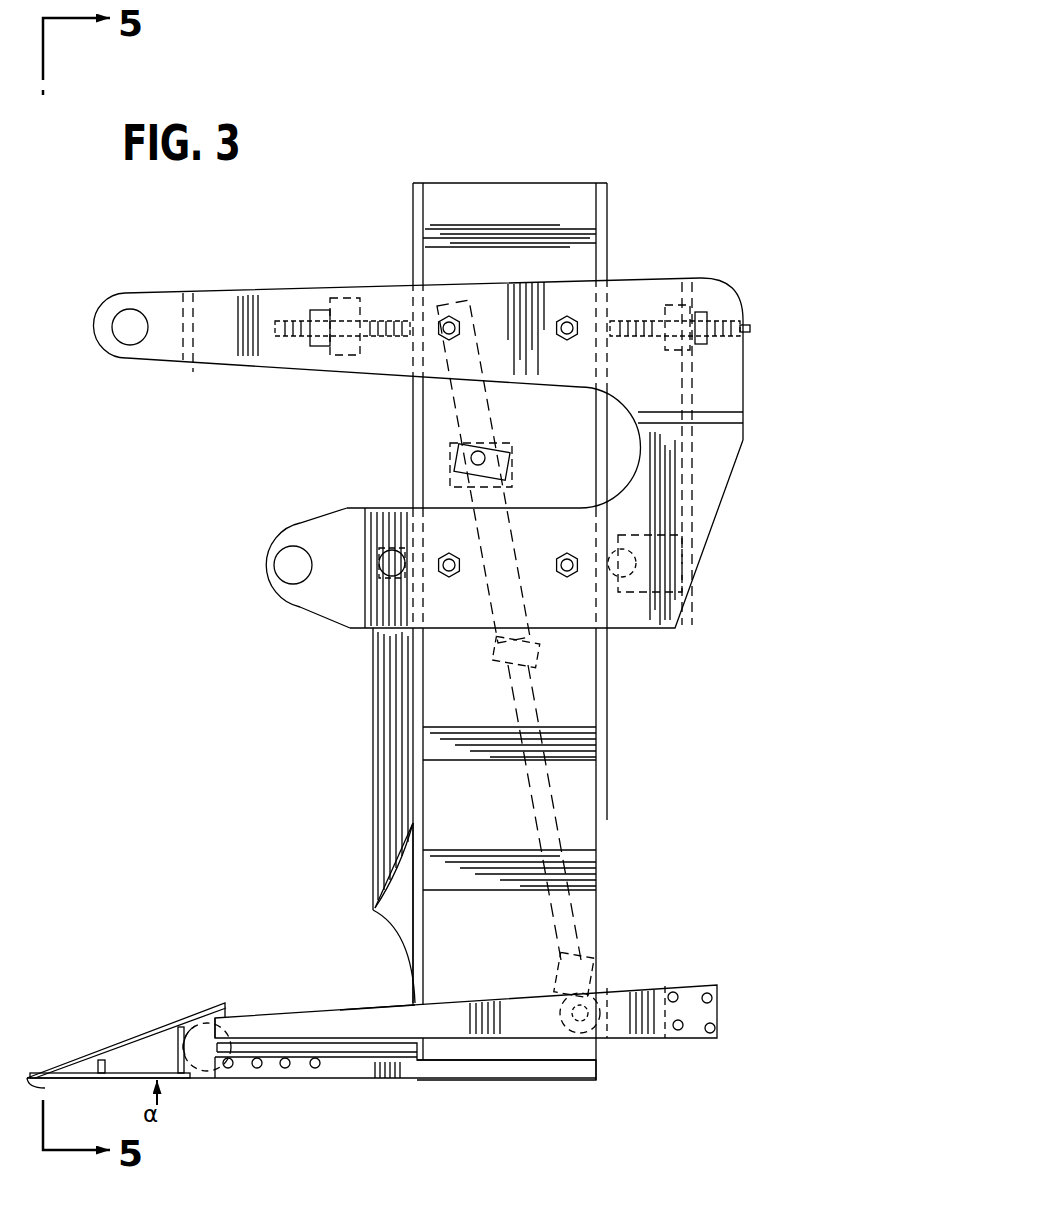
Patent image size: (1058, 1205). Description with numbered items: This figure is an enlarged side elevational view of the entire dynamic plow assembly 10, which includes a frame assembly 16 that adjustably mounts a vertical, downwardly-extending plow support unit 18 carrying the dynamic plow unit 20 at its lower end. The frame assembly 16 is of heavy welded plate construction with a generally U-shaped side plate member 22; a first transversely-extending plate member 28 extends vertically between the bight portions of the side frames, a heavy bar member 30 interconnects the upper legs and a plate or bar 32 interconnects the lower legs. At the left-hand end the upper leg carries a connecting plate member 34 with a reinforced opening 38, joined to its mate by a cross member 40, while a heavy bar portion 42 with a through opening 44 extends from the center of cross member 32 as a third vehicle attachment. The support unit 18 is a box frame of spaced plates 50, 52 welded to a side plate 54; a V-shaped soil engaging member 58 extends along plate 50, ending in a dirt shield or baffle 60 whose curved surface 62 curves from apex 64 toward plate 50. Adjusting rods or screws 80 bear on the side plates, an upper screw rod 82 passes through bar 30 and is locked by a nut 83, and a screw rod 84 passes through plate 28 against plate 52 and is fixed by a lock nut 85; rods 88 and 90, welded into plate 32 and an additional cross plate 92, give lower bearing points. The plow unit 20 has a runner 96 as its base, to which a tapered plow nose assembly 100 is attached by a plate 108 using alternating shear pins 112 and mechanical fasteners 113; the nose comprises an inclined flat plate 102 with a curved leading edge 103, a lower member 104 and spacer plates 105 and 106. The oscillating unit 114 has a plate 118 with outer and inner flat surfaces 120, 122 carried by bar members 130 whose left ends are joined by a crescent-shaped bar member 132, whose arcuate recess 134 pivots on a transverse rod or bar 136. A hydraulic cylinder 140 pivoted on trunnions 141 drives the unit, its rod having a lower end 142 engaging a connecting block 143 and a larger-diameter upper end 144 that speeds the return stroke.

The dynamic plow assembly 10 is at (655, 222).
The frame assembly 16 is at (772, 333).
The plow support unit 18 is at (612, 712).
The dynamic plow unit 20 is at (386, 983).
The side plate member 22 is at (630, 620).
The first transversely-extending plate member 28 is at (693, 388).
The bar member 30 is at (340, 355).
The plate or bar 32 is at (398, 507).
The connecting plate member 34 is at (218, 340).
The reinforced opening 38 is at (128, 335).
The cross member 40 is at (197, 360).
The bar portion 42 is at (275, 595).
The through opening 44 is at (285, 566).
The plate 50 is at (412, 690).
The plate 52 is at (605, 700).
The side plate 54 is at (580, 792).
The soil engaging member 58 is at (392, 732).
The dirt shield or baffle 60 is at (410, 965).
The curved surface 62 is at (390, 937).
The apex 64 is at (382, 770).
The adjusting rods or screws 80 is at (445, 340).
The upper screw rod 82 is at (375, 312).
The nut 83 is at (318, 310).
The screw rod 84 is at (625, 330).
The lock nut 85 is at (705, 322).
The rod 88 is at (398, 580).
The rod 90 is at (625, 565).
The cross plate 92 is at (672, 592).
The runner 96 is at (560, 1068).
The plow nose assembly 100 is at (150, 1003).
The inclined flat plate 102 is at (83, 1050).
The leading edge 103 is at (45, 1090).
The lower member 104 is at (78, 1078).
The spacer plate 105 is at (105, 1062).
The spacer plate 106 is at (188, 1022).
The plate 108 is at (187, 1077).
The shear pin 112 is at (228, 1069).
The mechanical fastener 113 is at (257, 1069).
The oscillating unit 114 is at (362, 980).
The plate 118 is at (337, 977).
The outer flat surface 120 is at (280, 1010).
The inner flat surface 122 is at (345, 1003).
The bar member 130 is at (718, 1010).
The crescent-shaped bar member 132 is at (215, 1015).
The arcuate recess 134 is at (222, 1080).
The transversely-extending rod or bar 136 is at (233, 1043).
The hydraulic cylinder 140 is at (498, 494).
The trunnion 141 is at (505, 450).
The lower end of cylinder rod 142 is at (590, 930).
The connecting block 143 is at (617, 985).
The upper end of cylinder rod 144 is at (470, 320).